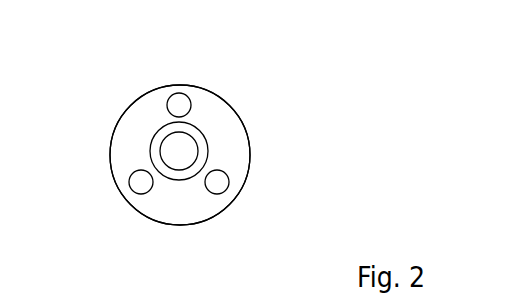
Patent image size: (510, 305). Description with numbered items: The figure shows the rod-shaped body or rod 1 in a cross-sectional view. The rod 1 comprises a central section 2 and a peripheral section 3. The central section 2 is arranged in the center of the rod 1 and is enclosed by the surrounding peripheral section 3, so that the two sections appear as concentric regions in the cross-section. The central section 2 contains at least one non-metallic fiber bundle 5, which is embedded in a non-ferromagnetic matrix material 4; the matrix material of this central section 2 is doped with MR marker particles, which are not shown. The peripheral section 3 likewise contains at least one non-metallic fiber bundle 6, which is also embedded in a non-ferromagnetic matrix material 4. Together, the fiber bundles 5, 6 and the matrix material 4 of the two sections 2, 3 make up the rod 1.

The rod-shaped body 1 is at (186, 65).
The central section 2 is at (203, 148).
The peripheral section 3 is at (125, 128).
The non-ferromagnetic matrix material 4 is at (228, 165).
The non-metallic fiber bundle 5 is at (180, 146).
The non-metallic fiber bundle 6 is at (140, 183).